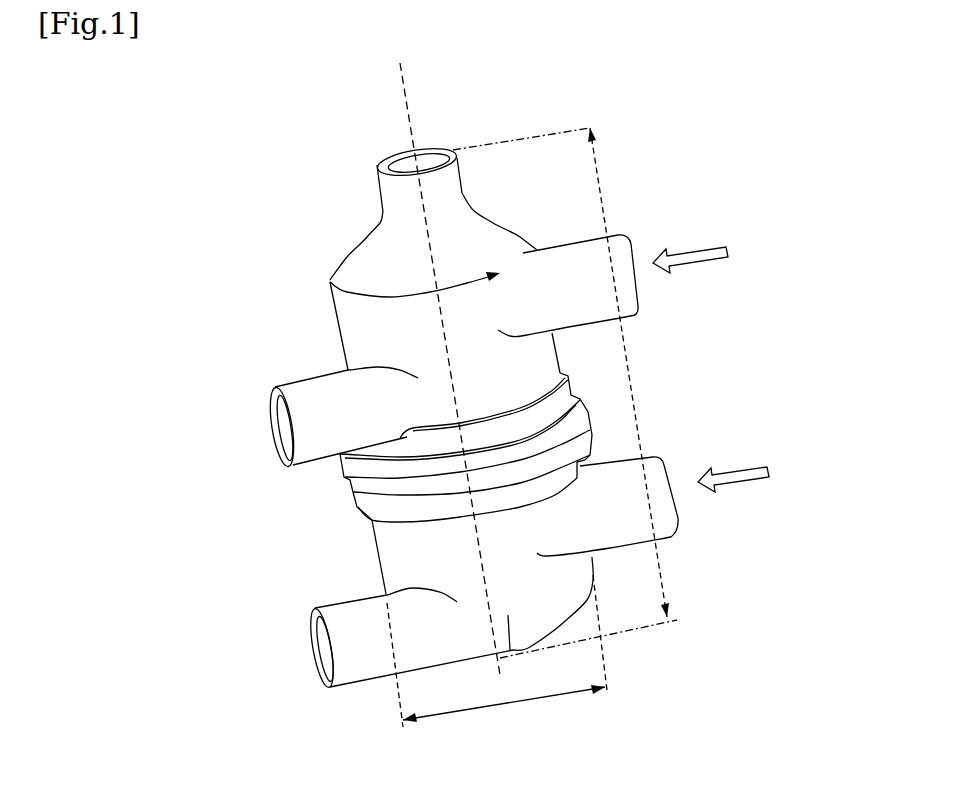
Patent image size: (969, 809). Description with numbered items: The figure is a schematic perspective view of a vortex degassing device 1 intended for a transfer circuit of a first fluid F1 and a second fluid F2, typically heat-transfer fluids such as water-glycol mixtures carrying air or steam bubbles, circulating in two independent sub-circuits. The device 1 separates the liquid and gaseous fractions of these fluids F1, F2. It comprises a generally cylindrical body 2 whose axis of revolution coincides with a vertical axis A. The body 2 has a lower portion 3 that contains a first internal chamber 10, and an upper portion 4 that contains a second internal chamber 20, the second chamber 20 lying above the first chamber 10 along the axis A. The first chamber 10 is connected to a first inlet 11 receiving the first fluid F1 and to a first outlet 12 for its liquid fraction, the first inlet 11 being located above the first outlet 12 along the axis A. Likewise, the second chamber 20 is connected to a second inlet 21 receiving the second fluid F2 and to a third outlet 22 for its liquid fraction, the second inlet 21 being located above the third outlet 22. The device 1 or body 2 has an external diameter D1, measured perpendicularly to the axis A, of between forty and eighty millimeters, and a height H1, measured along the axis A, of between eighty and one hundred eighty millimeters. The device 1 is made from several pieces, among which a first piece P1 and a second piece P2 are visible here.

The vortex degassing device 1 is at (207, 174).
The generally cylindrical body 2 is at (366, 227).
The lower portion 3 is at (568, 603).
The upper portion 4 is at (467, 307).
The first internal chamber 10 is at (545, 527).
The first inlet 11 is at (660, 487).
The first outlet 12 is at (318, 622).
The second internal chamber 20 is at (507, 357).
The second inlet 21 is at (630, 260).
The third outlet 22 is at (293, 387).
The axis A is at (408, 102).
The first piece P1 is at (306, 573).
The second piece P2 is at (313, 289).
The first fluid F1 is at (747, 483).
The second fluid F2 is at (713, 243).
The height H1 is at (663, 570).
The external diameter D1 is at (503, 705).